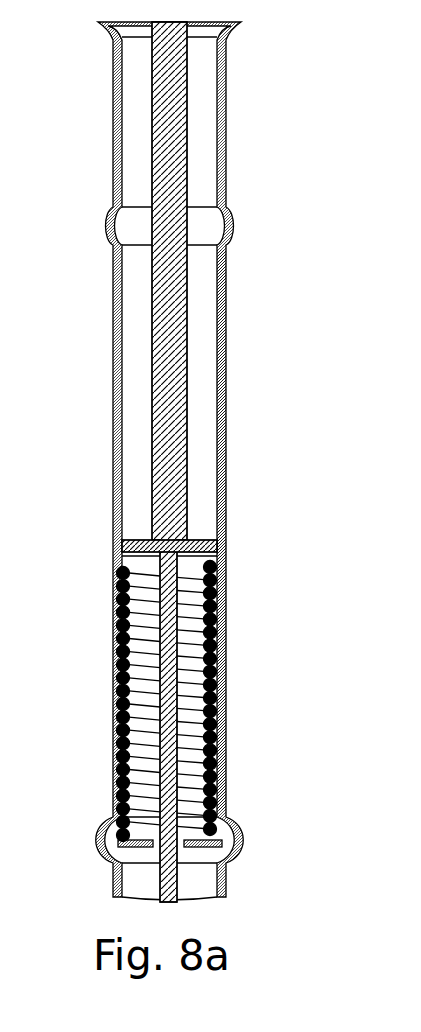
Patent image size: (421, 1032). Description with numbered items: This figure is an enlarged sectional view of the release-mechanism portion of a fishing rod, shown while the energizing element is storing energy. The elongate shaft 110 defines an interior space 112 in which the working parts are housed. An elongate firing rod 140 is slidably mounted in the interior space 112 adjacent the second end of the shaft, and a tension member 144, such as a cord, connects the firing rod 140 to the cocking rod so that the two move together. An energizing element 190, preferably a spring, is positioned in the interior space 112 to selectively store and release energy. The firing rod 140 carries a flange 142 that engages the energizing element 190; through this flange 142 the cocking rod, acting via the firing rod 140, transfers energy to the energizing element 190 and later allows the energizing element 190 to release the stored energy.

The elongate shaft 110 is at (216, 461).
The interior space 112 is at (200, 383).
The elongate firing rod 140 is at (157, 338).
The flange 142 is at (202, 540).
The tension member 144 is at (158, 558).
The energizing element 190 is at (225, 660).